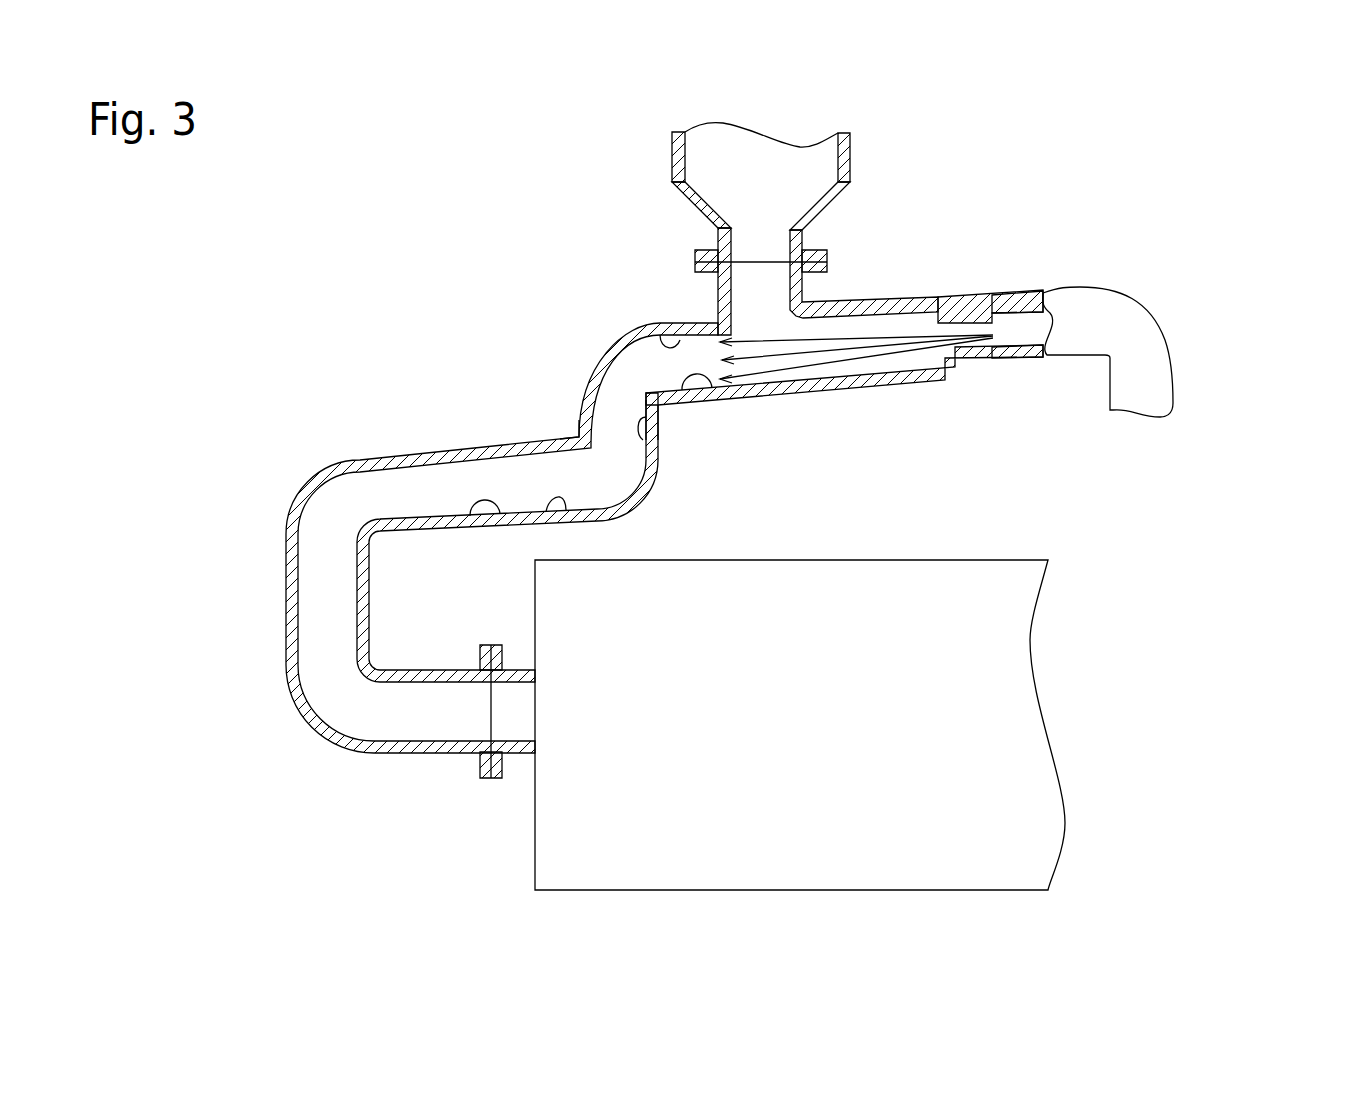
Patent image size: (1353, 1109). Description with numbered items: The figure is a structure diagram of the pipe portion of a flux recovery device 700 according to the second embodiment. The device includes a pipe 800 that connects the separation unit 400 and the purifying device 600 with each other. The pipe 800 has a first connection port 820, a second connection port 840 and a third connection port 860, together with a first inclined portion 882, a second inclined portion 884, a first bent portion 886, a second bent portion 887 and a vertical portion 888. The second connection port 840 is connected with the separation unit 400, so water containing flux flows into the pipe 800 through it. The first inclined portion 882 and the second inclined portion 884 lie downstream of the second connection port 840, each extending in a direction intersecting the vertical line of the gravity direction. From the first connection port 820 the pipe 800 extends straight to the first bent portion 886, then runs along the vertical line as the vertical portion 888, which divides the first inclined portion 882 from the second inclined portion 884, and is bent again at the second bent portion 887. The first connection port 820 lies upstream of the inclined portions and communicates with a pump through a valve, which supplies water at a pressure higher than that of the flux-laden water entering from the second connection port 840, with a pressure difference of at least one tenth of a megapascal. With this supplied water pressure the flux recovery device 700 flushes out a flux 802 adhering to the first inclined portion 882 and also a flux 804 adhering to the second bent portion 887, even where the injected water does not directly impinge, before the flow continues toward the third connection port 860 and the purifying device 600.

The separation unit 400 is at (852, 156).
The second connection port 840 is at (772, 256).
The pipe 800 is at (338, 415).
The first connection port 820 is at (1010, 356).
The flux recovery device 700 is at (1190, 191).
The first inclined portion 882 is at (658, 325).
The second bent portion 887 is at (577, 436).
The flux 802 is at (697, 405).
The first bent portion 886 is at (646, 432).
The vertical portion 888 is at (660, 405).
The second inclined portion 884 is at (553, 498).
The flux 804 is at (485, 522).
The third connection port 860 is at (513, 677).
The purifying device 600 is at (598, 888).